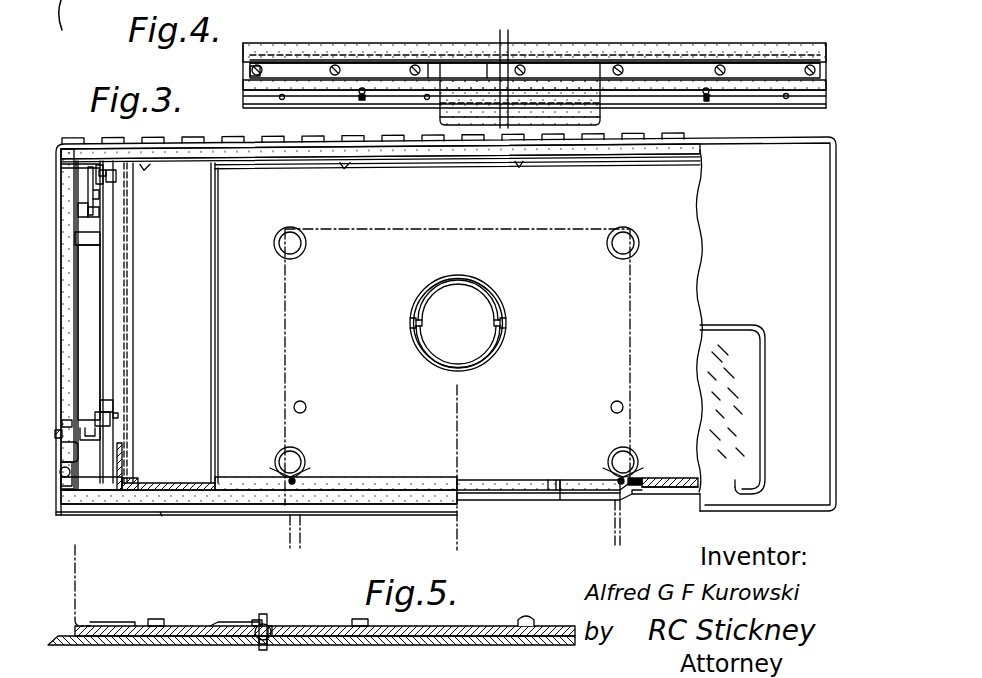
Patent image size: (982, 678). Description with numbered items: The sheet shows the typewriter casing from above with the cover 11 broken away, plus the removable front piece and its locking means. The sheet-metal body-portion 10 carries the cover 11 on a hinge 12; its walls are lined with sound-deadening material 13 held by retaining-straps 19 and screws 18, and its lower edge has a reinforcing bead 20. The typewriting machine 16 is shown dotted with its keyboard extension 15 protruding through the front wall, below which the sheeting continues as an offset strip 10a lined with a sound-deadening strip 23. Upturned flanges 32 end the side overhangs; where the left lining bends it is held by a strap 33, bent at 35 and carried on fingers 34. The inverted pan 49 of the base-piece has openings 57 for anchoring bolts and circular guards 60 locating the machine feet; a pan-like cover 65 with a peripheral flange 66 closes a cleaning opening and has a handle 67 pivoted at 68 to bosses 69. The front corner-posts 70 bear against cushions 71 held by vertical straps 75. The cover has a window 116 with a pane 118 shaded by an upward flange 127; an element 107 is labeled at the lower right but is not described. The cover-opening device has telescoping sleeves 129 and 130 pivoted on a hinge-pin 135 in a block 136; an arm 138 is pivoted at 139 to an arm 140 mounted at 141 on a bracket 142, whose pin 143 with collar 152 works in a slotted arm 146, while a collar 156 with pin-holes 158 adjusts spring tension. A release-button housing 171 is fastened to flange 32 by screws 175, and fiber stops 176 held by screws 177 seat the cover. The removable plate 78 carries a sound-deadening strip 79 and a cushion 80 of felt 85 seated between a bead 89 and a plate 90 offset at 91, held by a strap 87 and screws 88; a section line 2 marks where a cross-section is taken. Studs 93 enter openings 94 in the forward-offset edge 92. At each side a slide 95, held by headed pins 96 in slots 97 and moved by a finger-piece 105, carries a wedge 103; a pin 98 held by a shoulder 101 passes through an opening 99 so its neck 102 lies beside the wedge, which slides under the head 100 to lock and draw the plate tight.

In FIG. 4, the section line 2 is at (485, 5).
In FIG. 3, the body-portion 10 is at (48, 334).
In FIG. 3, the offset strip 10a is at (576, 500).
In FIG. 3, the cover 11 is at (705, 207).
In FIG. 3, the hinge 12 is at (178, 133).
In FIG. 3, the sound-deadening material 13 is at (208, 150).
In FIG. 3, the keyboard extension 15 is at (612, 536).
In FIG. 3, the typewriting machine 16 is at (636, 306).
In FIG. 3, the screws 18 is at (150, 165).
In FIG. 3, the retaining-straps 19 is at (357, 168).
In FIG. 3, the reinforcing bead 20 is at (516, 500).
In FIG. 3, the sound-deadening strip 23 is at (522, 480).
In FIG. 3, the flanges 32 is at (60, 502).
In FIG. 3, the strap 33 is at (134, 331).
In FIG. 3, the fingers 34 is at (134, 166).
In FIG. 3, the longitudinal bend 35 is at (128, 257).
In FIG. 3, the inverted sheet-metal pan 49 is at (240, 325).
In FIG. 3, the openings 57 is at (306, 405).
In FIG. 3, the guards 60 is at (304, 452).
In FIG. 3, the pan-like cover 65 is at (504, 274).
In FIG. 3, the peripheral flange 66 is at (468, 275).
In FIG. 3, the handle 67 is at (490, 300).
In FIG. 3, the pivot 68 is at (412, 314).
In FIG. 3, the bosses 69 is at (508, 318).
In FIG. 3, the front corner-posts 70 is at (276, 462).
In FIG. 3, the cushions 71 is at (300, 480).
In FIG. 3, the vertical straps 75 is at (640, 480).
In FIG. 4, the plate 78 is at (234, 93).
In FIG. 5, the plate 78 is at (545, 645).
In FIG. 4, the strip of sound-deadening material 79 is at (600, 116).
In FIG. 4, the cushion 80 is at (355, 44).
In FIG. 4, the strip of felt 85 is at (822, 80).
In FIG. 4, the strap 87 is at (677, 63).
In FIG. 4, the screws 88 is at (618, 66).
In FIG. 4, the bead 89 is at (700, 55).
In FIG. 4, the plate 90 is at (252, 68).
In FIG. 4, the rearward offset 91 is at (298, 63).
In FIG. 5, the offset edge 92 is at (466, 626).
In FIG. 4, the studs 93 is at (283, 100).
In FIG. 5, the studs 93 is at (528, 622).
In FIG. 5, the openings 94 is at (526, 622).
In FIG. 3, the slide 95 is at (160, 512).
In FIG. 3, the headed pins 96 is at (212, 512).
In FIG. 5, the headed pins 96 is at (158, 619).
In FIG. 3, the slots 97 is at (198, 512).
In FIG. 5, the slots 97 is at (114, 620).
In FIG. 4, the pin 98 is at (366, 104).
In FIG. 5, the pin 98 is at (260, 650).
In FIG. 5, the opening 99 is at (272, 630).
In FIG. 4, the head 100 is at (702, 99).
In FIG. 5, the head 100 is at (262, 616).
In FIG. 4, the shoulder 101 is at (708, 102).
In FIG. 5, the shoulder 101 is at (270, 640).
In FIG. 4, the neck 102 is at (720, 99).
In FIG. 5, the neck 102 is at (258, 620).
In FIG. 5, the wedge 103 is at (238, 622).
In FIG. 3, the finger-piece 105 is at (121, 478).
In FIG. 5, the finger-piece 105 is at (82, 556).
In FIG. 3, the corner 107 is at (706, 508).
In FIG. 3, the window 116 is at (748, 488).
In FIG. 3, the window-pane 118 is at (760, 378).
In FIG. 3, the upward flange 127 is at (752, 340).
In FIG. 3, the housing-member 129 is at (100, 236).
In FIG. 3, the housing-member 130 is at (103, 289).
In FIG. 3, the hinge-pin 135 is at (118, 416).
In FIG. 3, the block 136 is at (114, 398).
In FIG. 3, the arm 138 is at (91, 332).
In FIG. 3, the pivot 139 is at (99, 211).
In FIG. 3, the arm 140 is at (80, 210).
In FIG. 3, the pivot 141 is at (106, 170).
In FIG. 3, the bracket 142 is at (99, 166).
In FIG. 3, the pin 143 is at (99, 194).
In FIG. 3, the arm 146 is at (96, 170).
In FIG. 3, the collar 152 is at (86, 192).
In FIG. 3, the collar 156 is at (96, 418).
In FIG. 3, the pin-holes 158 is at (94, 440).
In FIG. 3, the release-button housing 171 is at (76, 452).
In FIG. 3, the flat-head screws 175 is at (60, 470).
In FIG. 3, the fiber pieces 176 is at (58, 432).
In FIG. 3, the screws 177 is at (60, 422).